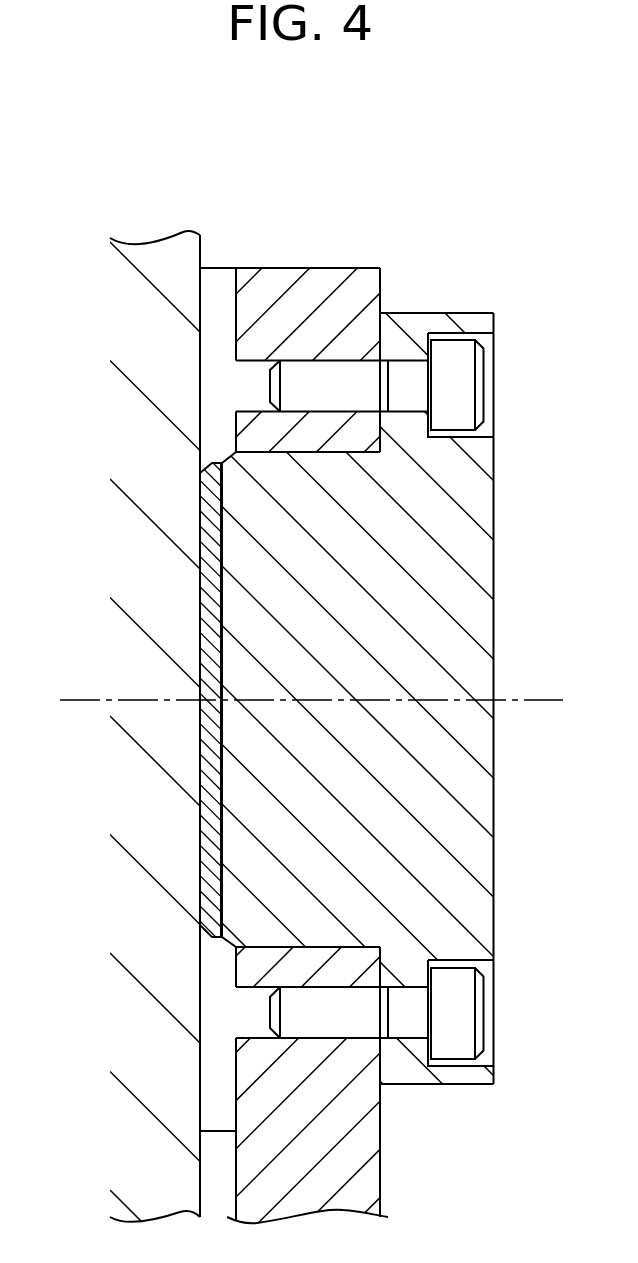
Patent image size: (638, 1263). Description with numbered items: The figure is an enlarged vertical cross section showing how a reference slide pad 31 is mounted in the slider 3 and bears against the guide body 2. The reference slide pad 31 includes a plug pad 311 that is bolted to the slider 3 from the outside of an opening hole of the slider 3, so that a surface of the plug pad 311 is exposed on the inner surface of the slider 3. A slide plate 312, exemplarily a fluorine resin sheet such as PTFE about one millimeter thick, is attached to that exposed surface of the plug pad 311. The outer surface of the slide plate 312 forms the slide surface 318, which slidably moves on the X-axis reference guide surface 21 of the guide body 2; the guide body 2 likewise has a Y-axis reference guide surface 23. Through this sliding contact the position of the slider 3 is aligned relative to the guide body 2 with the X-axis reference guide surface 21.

The guide body 2 is at (190, 214).
The slider 3 is at (369, 255).
The X-axis reference guide surface 21 is at (122, 360).
The Y-axis reference guide surface 23 is at (200, 405).
The reference slide pad 31 is at (321, 642).
The plug pad 311 is at (483, 555).
The slide plate 312 is at (207, 579).
The slide surface 318 is at (199, 643).